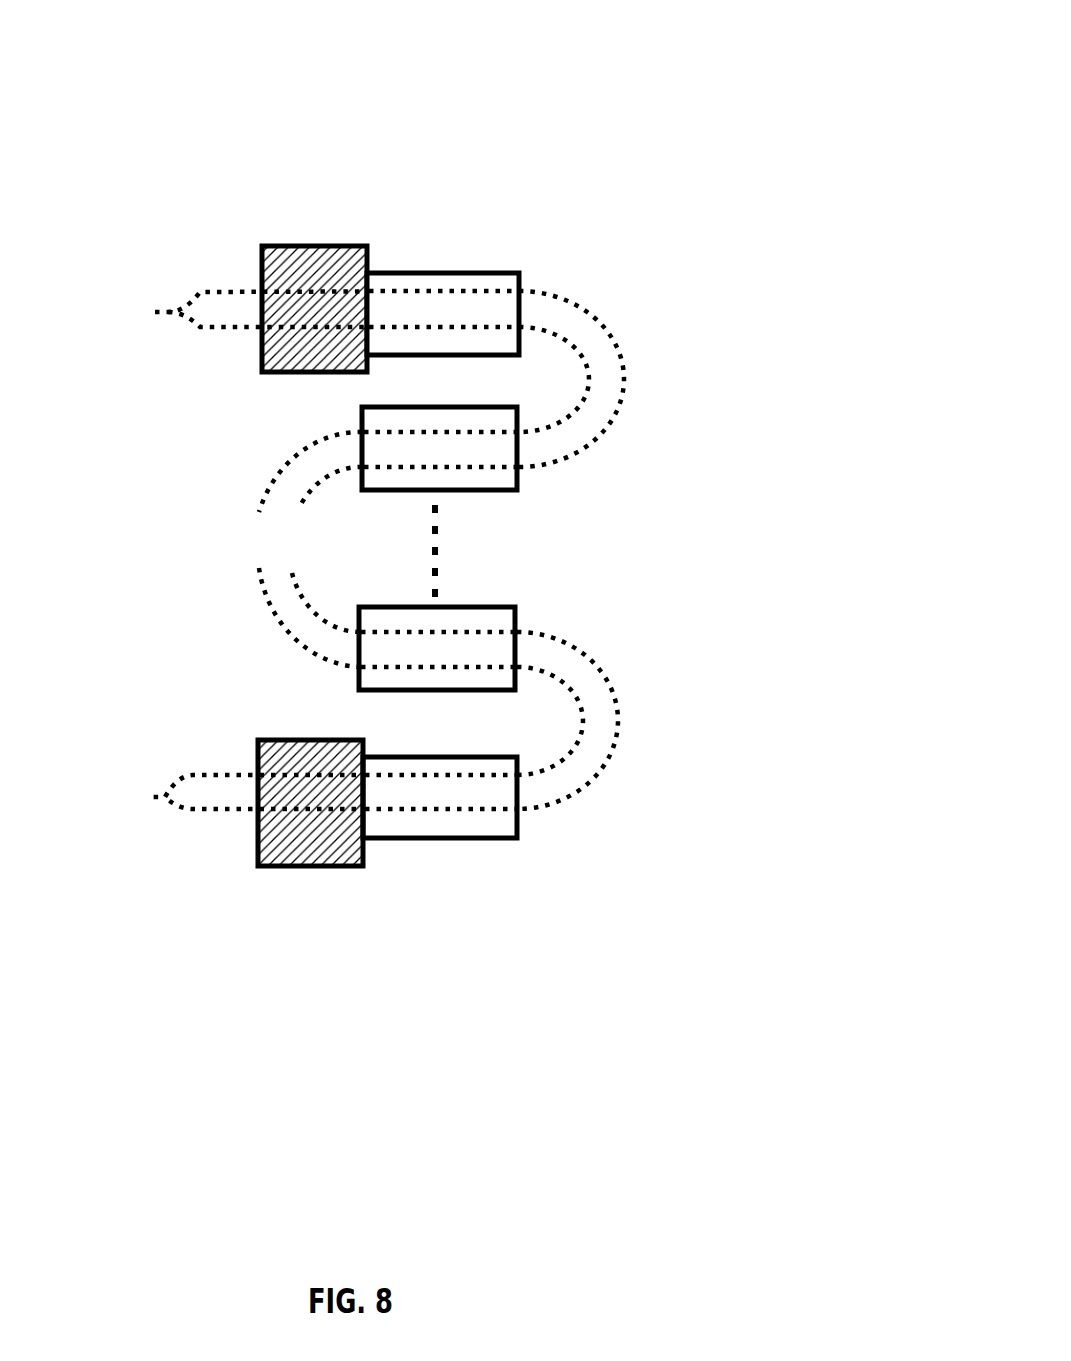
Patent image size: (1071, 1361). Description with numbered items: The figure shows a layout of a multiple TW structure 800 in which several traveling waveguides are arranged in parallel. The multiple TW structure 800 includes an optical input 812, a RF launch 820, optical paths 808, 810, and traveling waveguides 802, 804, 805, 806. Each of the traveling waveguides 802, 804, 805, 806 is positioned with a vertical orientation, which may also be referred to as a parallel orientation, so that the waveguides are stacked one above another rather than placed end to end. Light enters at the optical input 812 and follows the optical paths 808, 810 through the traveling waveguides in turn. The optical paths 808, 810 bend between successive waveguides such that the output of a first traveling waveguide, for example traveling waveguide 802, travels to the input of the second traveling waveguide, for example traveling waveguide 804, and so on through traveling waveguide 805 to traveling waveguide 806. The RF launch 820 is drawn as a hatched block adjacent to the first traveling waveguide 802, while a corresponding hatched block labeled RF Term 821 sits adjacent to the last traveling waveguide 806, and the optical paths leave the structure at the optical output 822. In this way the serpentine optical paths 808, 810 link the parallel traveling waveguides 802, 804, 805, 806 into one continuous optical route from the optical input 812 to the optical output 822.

The multiple TW structure 800 is at (693, 100).
The traveling waveguide 802 is at (488, 273).
The traveling waveguide 804 is at (478, 490).
The traveling waveguide 805 is at (493, 607).
The traveling waveguide 806 is at (498, 840).
The optical path 808 is at (540, 290).
The optical path 810 is at (587, 355).
The optical input 812 is at (162, 308).
The RF launch 820 is at (358, 246).
The RF termination 821 is at (258, 830).
The optical output 822 is at (167, 798).